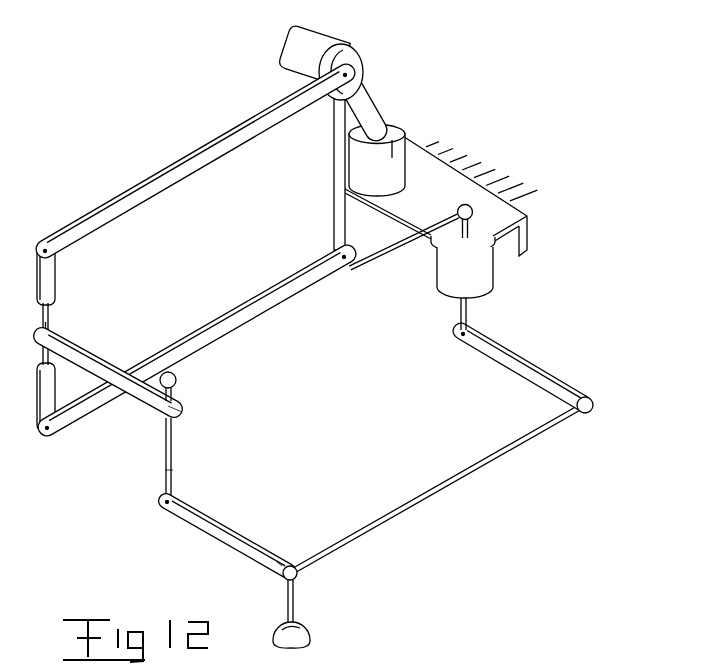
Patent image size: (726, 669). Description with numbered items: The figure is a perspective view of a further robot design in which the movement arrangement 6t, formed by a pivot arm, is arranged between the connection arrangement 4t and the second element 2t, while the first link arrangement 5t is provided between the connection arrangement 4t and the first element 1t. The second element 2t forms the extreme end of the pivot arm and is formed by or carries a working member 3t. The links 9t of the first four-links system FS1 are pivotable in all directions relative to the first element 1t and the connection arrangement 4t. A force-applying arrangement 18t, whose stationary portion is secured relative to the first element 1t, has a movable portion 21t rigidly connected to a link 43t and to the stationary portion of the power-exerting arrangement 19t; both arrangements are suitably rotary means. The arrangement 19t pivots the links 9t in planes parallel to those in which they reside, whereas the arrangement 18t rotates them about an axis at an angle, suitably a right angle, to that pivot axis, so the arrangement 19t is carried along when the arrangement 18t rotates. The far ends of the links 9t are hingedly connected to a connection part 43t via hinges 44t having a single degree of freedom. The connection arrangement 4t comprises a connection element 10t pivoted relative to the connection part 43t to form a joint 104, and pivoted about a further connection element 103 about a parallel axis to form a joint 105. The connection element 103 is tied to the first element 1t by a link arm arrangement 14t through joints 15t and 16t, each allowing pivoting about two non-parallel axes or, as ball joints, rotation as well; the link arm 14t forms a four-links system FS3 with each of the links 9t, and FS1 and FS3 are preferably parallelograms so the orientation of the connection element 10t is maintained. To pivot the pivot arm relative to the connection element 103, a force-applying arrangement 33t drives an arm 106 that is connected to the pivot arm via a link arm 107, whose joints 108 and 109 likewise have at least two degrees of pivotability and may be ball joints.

The first element 1t is at (446, 190).
The second element 2t is at (277, 561).
The working member 3t is at (305, 637).
The connection arrangement 4t is at (165, 468).
The first link arrangement 5t is at (144, 124).
The movement arrangement 6t is at (191, 544).
The links 9t is at (158, 188).
The connection element 10t is at (102, 367).
The link arm arrangement 14t is at (307, 331).
The joint 15t is at (196, 383).
The joint 16t is at (473, 211).
The force-applying arrangement 18t is at (392, 160).
The power-exerting arrangement 19t is at (320, 42).
The movable portion 21t is at (358, 112).
The force-applying arrangement 33t is at (480, 272).
The link / connection part 43t is at (340, 163).
The hinges 44t is at (45, 241).
The further connection element 103 is at (173, 451).
The joint 104 is at (64, 320).
The joint 105 is at (199, 412).
The arm 106 is at (531, 367).
The link arm 107 is at (468, 471).
The joint 108 is at (300, 573).
The joint 109 is at (592, 411).
The first four-links system FS1 is at (195, 135).
The four-links system FS3 is at (366, 334).